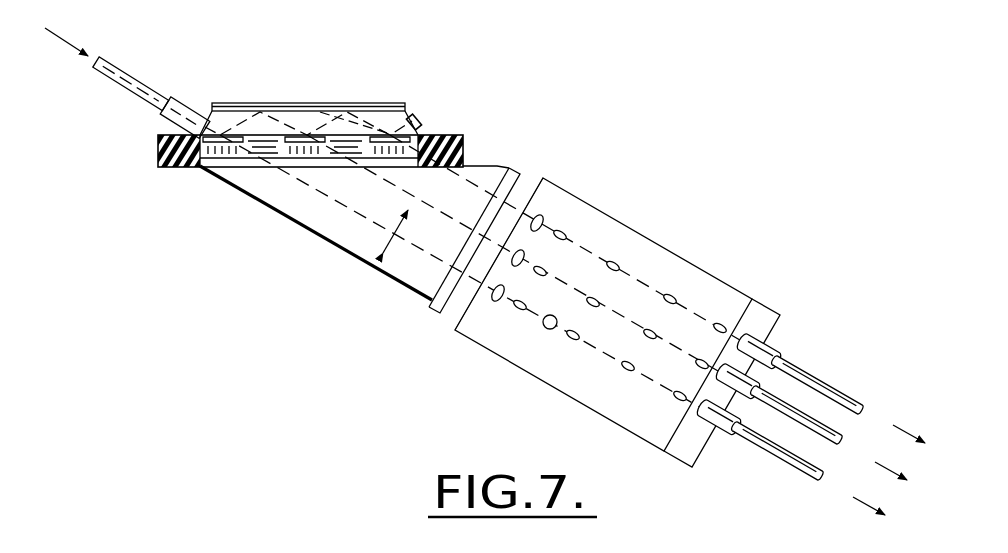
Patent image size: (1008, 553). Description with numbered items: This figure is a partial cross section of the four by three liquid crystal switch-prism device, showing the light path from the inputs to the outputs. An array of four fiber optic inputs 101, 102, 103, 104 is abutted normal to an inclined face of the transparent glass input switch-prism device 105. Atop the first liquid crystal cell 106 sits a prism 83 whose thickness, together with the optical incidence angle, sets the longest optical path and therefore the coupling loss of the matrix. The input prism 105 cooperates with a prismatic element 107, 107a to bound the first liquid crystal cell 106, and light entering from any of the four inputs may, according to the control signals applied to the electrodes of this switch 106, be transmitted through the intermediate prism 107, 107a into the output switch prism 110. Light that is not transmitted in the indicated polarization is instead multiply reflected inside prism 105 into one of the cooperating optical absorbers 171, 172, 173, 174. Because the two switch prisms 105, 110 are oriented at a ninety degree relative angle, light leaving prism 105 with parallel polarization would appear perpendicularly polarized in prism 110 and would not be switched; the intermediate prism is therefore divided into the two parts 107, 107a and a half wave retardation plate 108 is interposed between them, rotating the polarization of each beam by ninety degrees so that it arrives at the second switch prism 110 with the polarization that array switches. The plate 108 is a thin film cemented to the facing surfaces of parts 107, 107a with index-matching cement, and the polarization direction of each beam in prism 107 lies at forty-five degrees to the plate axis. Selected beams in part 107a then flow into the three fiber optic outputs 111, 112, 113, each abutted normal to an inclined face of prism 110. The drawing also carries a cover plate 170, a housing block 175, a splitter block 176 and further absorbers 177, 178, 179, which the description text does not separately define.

The fiber optic input 101 is at (168, 69).
The fiber optic input 102 is at (168, 69).
The fiber optic input 103 is at (168, 69).
The fiber optic input 104 is at (143, 82).
The input switch-prism device 105 is at (357, 93).
The cover plate 170 is at (283, 103).
The prism atop liquid crystal cell 83 is at (385, 120).
The optical absorber 171 is at (581, 105).
The optical absorber 172 is at (581, 105).
The optical absorber 173 is at (581, 105).
The optical absorber 174 is at (430, 119).
The housing block 175 is at (148, 152).
The first liquid crystal cell 106 is at (245, 168).
The prismatic element 107 is at (340, 238).
The prismatic element 107a is at (455, 310).
The half wave retardation plate 108 is at (514, 170).
The polarization splitter block 176 is at (657, 242).
The absorber 177 is at (688, 254).
The absorber 178 is at (688, 254).
The absorber 179 is at (552, 212).
The output switch-prism device 110 is at (713, 290).
The fiber optic output 111 is at (840, 380).
The fiber optic output 112 is at (788, 422).
The fiber optic output 113 is at (788, 472).